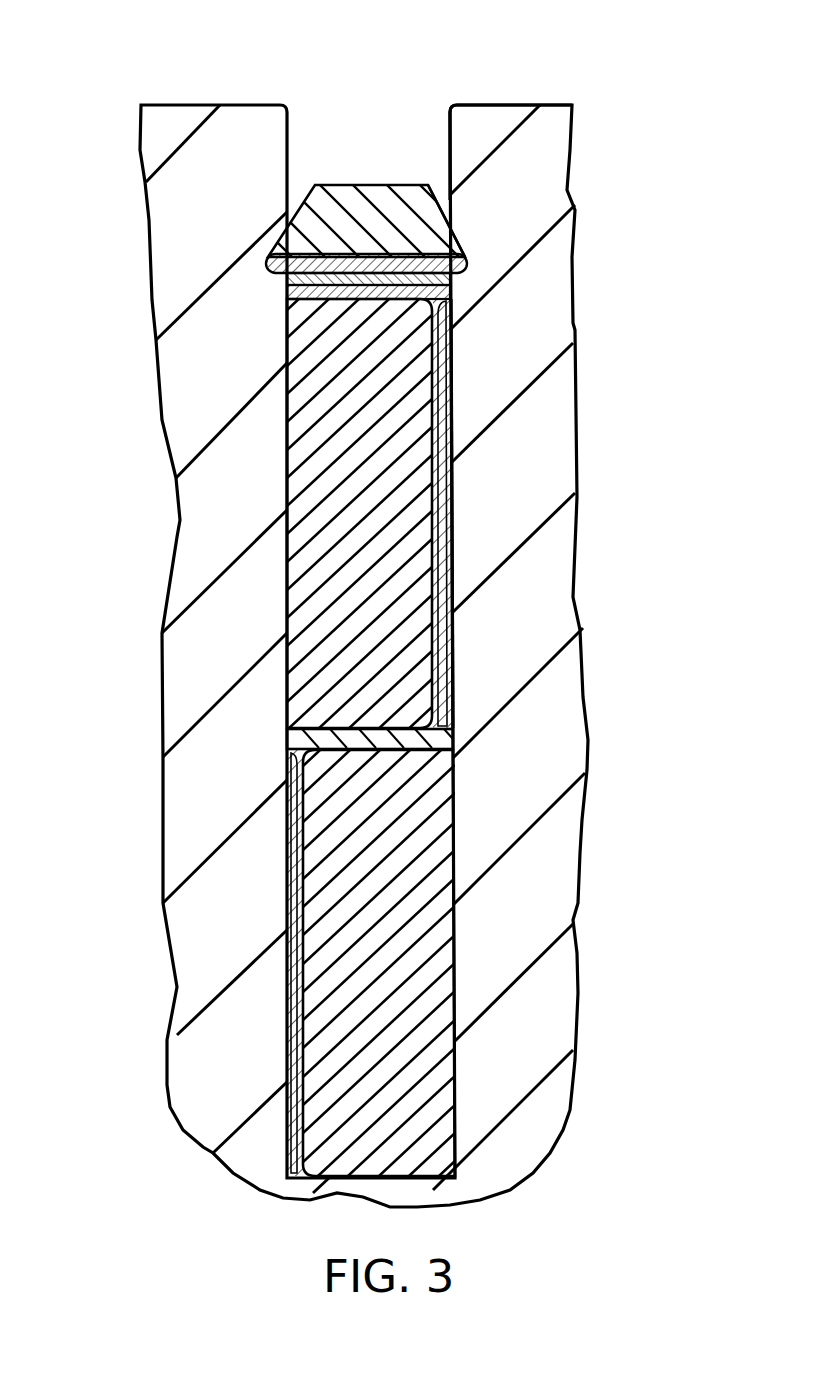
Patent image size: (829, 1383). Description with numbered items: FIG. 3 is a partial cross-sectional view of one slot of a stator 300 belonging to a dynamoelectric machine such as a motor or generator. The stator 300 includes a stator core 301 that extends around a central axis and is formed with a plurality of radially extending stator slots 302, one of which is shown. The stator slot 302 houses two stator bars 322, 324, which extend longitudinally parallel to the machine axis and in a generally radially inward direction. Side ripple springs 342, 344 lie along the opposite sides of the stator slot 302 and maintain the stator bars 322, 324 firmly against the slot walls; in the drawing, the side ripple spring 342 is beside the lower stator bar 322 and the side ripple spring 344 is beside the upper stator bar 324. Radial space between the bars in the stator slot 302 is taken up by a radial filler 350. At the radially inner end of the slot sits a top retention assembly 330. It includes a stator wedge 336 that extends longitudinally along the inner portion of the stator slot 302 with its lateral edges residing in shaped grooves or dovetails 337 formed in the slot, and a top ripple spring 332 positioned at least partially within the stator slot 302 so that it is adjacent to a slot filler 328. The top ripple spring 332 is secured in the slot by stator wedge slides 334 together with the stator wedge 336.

The stator 300 is at (122, 32).
The stator core 301 is at (203, 533).
The stator slot 302 is at (444, 127).
The stator bar 322 is at (318, 1012).
The stator bar 324 is at (295, 697).
The slot filler 328 is at (446, 306).
The top retention assembly 330 is at (250, 273).
The top ripple spring 332 is at (290, 276).
The stator wedge slide 334 is at (467, 275).
The stator wedge 336 is at (314, 184).
The dovetail 337 is at (455, 233).
The side ripple spring 342 is at (290, 906).
The side ripple spring 344 is at (452, 550).
The radial filler 350 is at (313, 737).